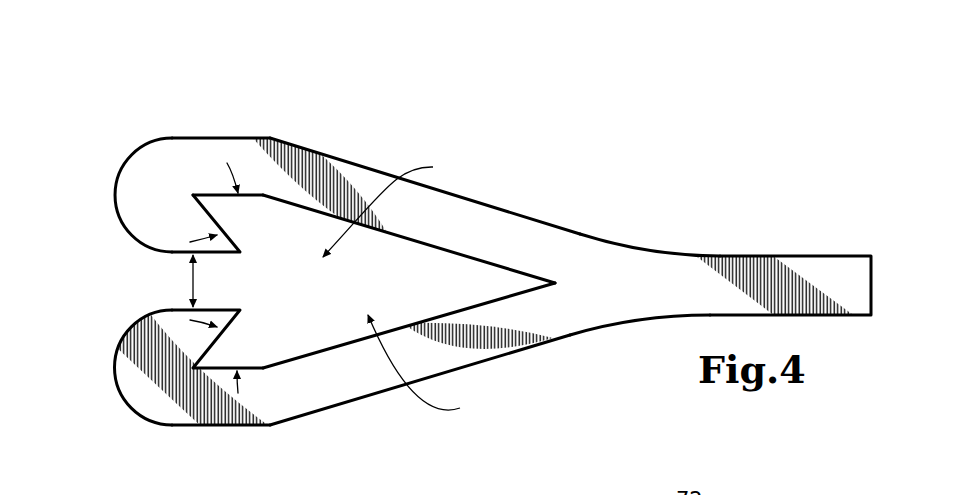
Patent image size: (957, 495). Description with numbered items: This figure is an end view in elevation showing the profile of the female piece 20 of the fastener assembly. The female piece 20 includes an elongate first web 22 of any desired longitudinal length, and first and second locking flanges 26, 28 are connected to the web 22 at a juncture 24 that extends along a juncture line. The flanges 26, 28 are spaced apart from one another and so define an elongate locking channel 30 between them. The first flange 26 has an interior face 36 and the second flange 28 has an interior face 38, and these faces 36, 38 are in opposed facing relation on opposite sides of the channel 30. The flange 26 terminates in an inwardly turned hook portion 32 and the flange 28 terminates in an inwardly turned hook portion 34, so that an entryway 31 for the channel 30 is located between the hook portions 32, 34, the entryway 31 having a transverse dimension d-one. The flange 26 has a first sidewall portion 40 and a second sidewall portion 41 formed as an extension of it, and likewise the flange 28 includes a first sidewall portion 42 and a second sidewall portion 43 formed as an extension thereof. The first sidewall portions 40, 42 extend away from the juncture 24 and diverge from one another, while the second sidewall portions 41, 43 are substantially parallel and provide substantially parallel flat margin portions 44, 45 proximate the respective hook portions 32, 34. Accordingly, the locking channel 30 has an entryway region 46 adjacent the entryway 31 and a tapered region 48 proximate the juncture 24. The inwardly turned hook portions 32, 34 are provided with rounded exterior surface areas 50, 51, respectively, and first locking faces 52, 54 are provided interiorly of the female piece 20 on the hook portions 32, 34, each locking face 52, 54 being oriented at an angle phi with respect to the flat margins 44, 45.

The female piece 20 is at (601, 145).
The first web 22 is at (785, 263).
The juncture 24 is at (658, 270).
The first locking flange 26 is at (433, 209).
The second locking flange 28 is at (441, 352).
The locking channel 30 is at (312, 297).
The entryway 31 is at (151, 283).
The hook portion 32 is at (181, 151).
The hook portion 34 is at (218, 399).
The interior face 36 is at (400, 240).
The interior face 38 is at (422, 320).
The first sidewall portion 40 is at (540, 217).
The second sidewall portion 41 is at (190, 145).
The first sidewall portion 42 is at (470, 350).
The second sidewall portion 43 is at (265, 407).
The flat margin portion 44 is at (203, 192).
The flat margin portion 45 is at (202, 418).
The entryway region 46 is at (392, 207).
The tapered region 48 is at (429, 368).
The rounded exterior surface area 50 is at (122, 167).
The rounded exterior surface area 51 is at (115, 375).
The first locking face 52 is at (233, 250).
The first locking face 54 is at (233, 324).